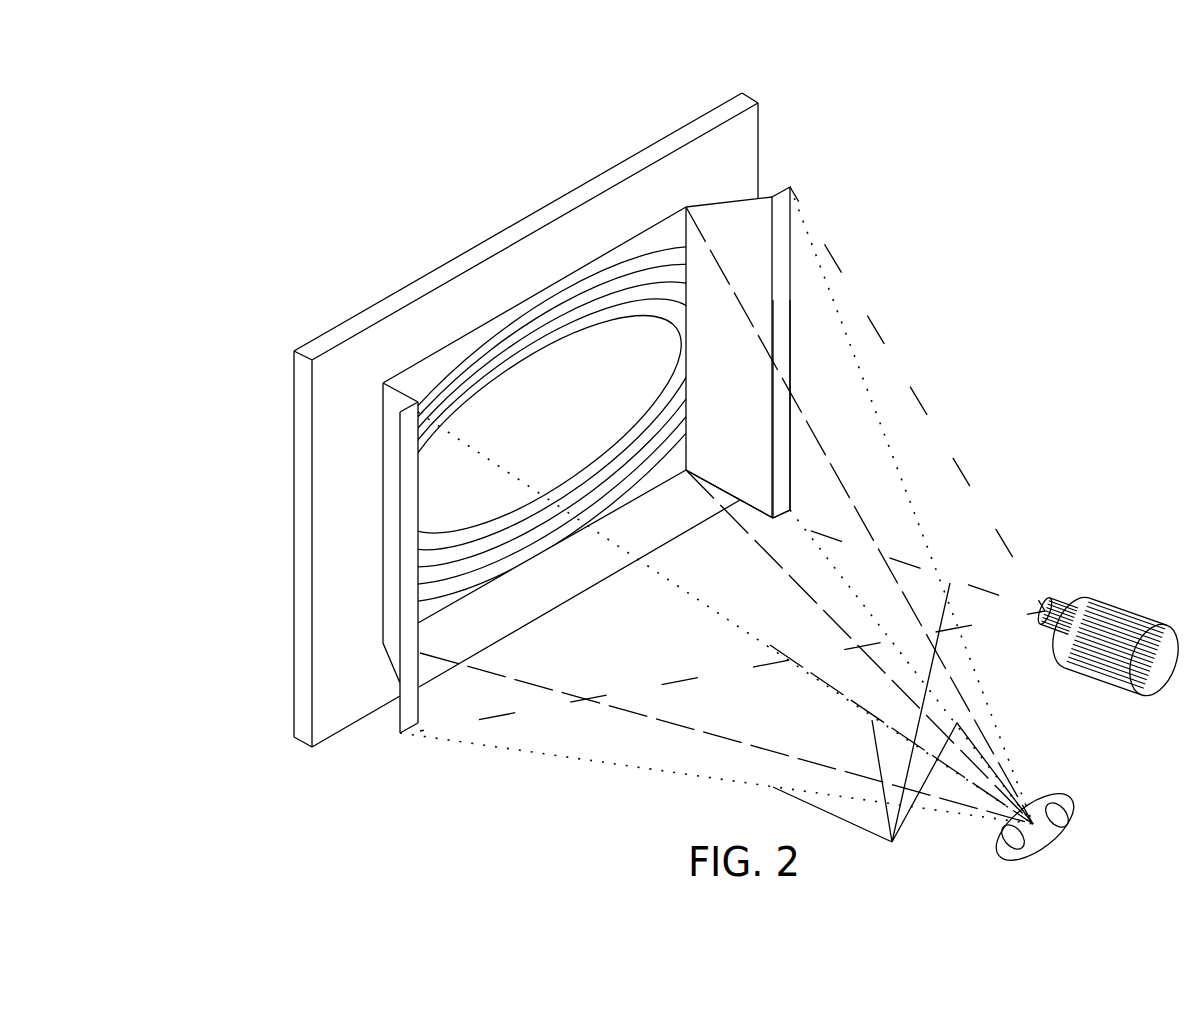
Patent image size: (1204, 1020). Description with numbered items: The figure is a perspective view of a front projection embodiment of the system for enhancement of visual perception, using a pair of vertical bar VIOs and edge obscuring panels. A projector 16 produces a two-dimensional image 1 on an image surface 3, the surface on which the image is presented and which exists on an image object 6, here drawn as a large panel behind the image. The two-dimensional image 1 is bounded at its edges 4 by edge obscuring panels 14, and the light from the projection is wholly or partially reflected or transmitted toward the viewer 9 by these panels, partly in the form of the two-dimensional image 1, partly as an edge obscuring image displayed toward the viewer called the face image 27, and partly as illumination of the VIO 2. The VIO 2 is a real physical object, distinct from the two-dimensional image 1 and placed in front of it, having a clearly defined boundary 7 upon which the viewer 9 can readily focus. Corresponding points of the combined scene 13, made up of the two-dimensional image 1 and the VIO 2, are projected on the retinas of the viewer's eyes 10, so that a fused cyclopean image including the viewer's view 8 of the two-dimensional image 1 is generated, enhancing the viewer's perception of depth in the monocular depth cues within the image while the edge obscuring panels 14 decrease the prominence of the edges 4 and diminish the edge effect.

The 2D image 1 is at (587, 385).
The VIO 2 is at (410, 505).
The image surface 3 is at (340, 379).
The edges 4 is at (690, 382).
The image object 6 is at (714, 113).
The boundary 7 is at (773, 403).
The view 8 is at (887, 563).
The viewer 9 is at (1073, 797).
The eyes 10 is at (1060, 806).
The combined scene 13 is at (903, 734).
The edge obscuring panels 14 is at (748, 483).
The projector 16 is at (1100, 671).
The face image 27 is at (750, 273).